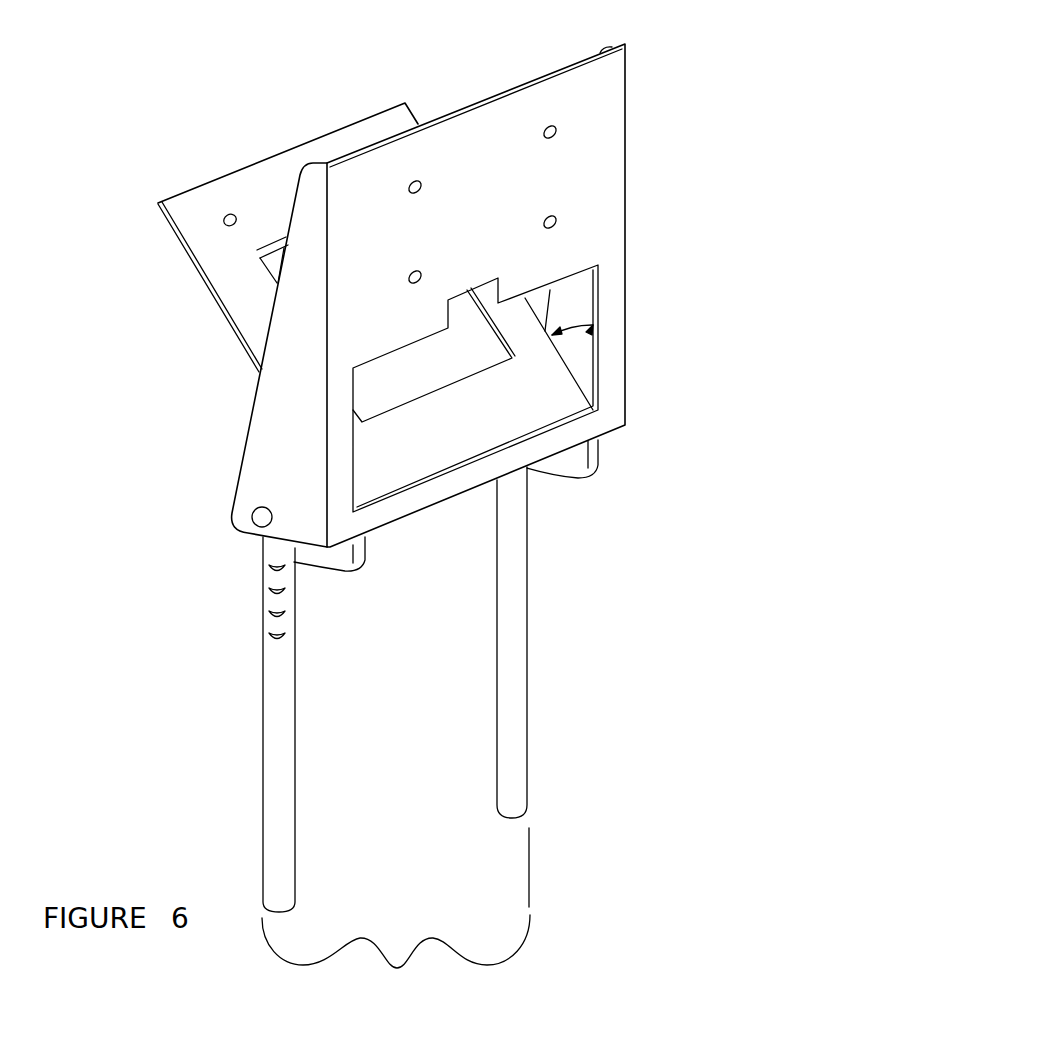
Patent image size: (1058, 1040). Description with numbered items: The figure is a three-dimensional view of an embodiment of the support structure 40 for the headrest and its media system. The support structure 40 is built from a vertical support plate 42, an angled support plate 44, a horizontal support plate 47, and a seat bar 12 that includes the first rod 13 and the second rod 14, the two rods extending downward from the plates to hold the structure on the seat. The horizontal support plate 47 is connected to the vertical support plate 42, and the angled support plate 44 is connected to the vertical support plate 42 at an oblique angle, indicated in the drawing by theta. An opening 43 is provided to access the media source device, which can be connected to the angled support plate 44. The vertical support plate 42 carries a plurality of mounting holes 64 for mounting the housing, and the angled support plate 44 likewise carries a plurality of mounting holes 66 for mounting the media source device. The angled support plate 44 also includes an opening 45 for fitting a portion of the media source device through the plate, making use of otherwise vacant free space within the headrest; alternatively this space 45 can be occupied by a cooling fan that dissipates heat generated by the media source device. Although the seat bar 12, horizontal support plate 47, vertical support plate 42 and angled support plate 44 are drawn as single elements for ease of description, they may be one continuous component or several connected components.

The seat bar 12 is at (396, 915).
The first rod 13 is at (270, 703).
The second rod 14 is at (518, 608).
The support structure 40 is at (268, 482).
The vertical support plate 42 is at (611, 72).
The opening 43 is at (473, 306).
The angled support plate 44 is at (381, 130).
The opening 45 is at (263, 262).
The horizontal support plate 47 is at (346, 558).
The mounting holes 64 is at (543, 139).
The mounting holes 66 is at (226, 212).